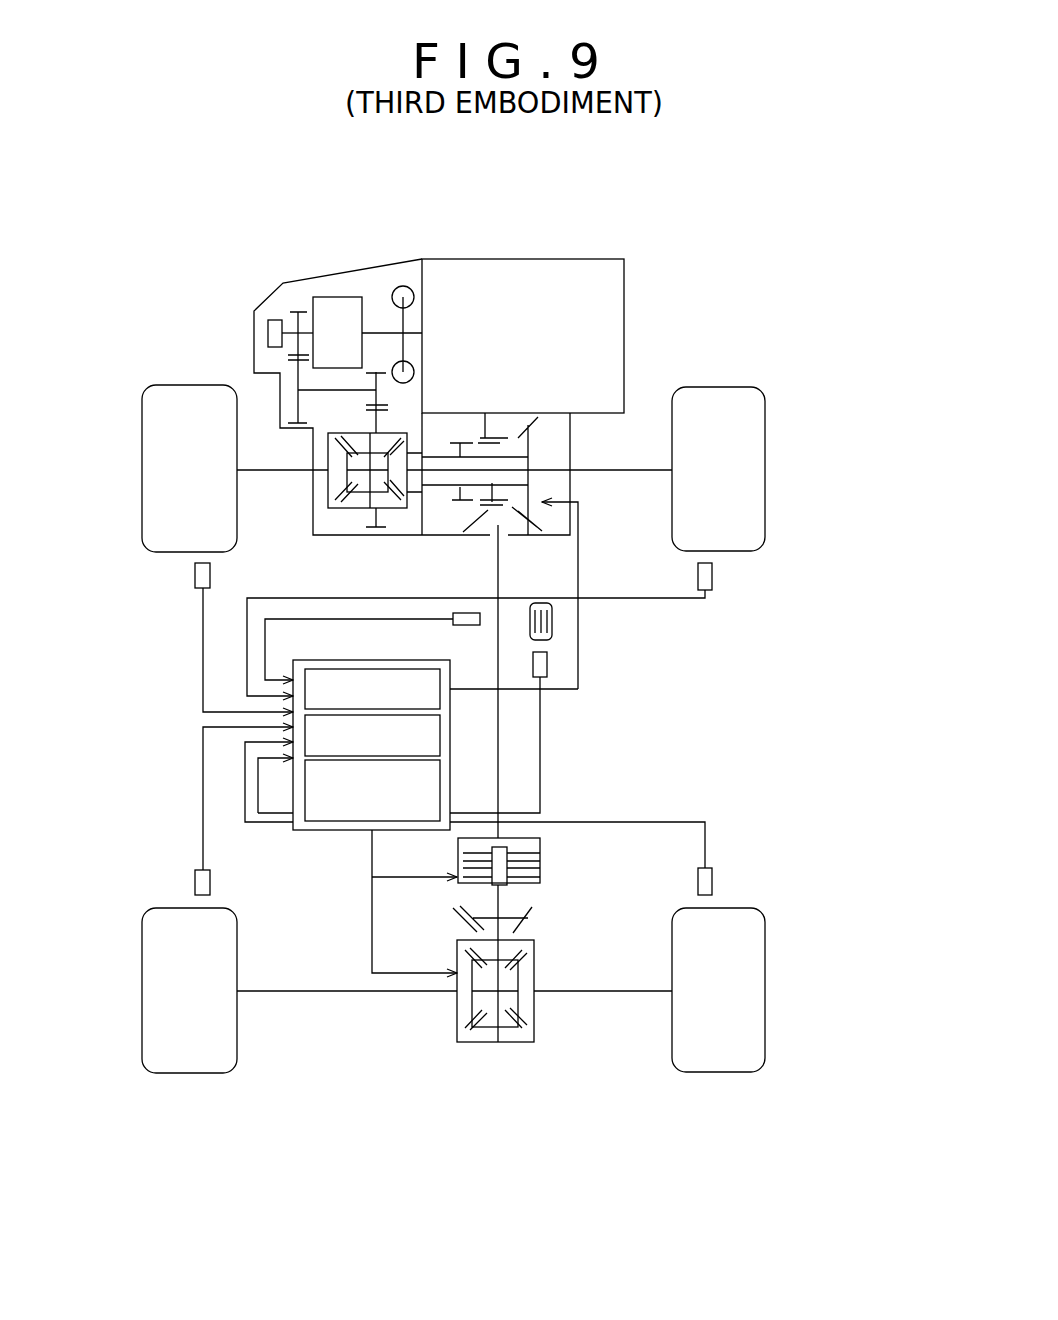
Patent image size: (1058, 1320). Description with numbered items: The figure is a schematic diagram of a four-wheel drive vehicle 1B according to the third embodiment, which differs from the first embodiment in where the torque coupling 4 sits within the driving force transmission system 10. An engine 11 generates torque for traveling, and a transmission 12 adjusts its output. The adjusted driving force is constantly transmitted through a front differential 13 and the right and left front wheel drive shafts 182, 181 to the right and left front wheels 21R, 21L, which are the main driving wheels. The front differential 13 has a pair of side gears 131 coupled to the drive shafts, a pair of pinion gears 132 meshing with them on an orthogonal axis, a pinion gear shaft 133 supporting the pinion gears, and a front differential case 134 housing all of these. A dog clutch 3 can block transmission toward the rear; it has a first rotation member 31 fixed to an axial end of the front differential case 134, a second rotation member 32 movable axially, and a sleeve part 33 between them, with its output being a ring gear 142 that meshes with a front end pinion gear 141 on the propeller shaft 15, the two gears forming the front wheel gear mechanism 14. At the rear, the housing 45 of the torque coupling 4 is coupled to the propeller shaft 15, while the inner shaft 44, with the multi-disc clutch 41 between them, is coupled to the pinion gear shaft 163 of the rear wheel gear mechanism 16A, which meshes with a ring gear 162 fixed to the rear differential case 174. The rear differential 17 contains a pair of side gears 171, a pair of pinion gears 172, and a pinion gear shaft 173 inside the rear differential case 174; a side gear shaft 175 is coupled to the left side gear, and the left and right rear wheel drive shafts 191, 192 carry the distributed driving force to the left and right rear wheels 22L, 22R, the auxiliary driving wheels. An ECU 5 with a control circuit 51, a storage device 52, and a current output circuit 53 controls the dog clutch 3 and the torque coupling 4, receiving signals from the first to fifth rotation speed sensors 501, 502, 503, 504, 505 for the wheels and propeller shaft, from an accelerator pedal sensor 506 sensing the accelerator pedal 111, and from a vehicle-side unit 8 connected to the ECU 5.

The four-wheel drive vehicle 1B is at (682, 212).
The driving force transmission system 10 is at (557, 861).
The engine 11 is at (483, 258).
The transmission 12 is at (308, 293).
The front differential 13 is at (337, 517).
The side gears 131 is at (350, 466).
The pinion gears 132 is at (365, 460).
The pinion gear shaft 133 is at (340, 474).
The front differential case 134 is at (343, 446).
The dog clutch 3 is at (617, 412).
The first rotation member 31 is at (465, 448).
The second rotation member 32 is at (487, 437).
The sleeve 33 is at (492, 485).
The front wheel gear mechanism 14 is at (629, 549).
The front end pinion gear 141 is at (525, 530).
The ring gear 142 is at (530, 437).
The propeller shaft 15 is at (502, 790).
The rear wheel gear mechanism 16A is at (656, 856).
The ring gear 162 is at (473, 918).
The pinion gear shaft 163 is at (532, 917).
The torque coupling 4 is at (505, 868).
The multi-disc clutch 41 is at (537, 875).
The inner shaft 44 is at (483, 878).
The housing 45 is at (458, 850).
The rear differential 17 is at (624, 1019).
The side gears 171 is at (517, 973).
The pinion gears 172 is at (500, 962).
The pinion gear shaft 173 is at (495, 990).
The rear differential case 174 is at (522, 1041).
The side gear shaft 175 is at (457, 992).
The left front wheel drive shaft 181 is at (303, 470).
The right front wheel drive shaft 182 is at (598, 470).
The left rear wheel drive shaft 191 is at (328, 993).
The right rear wheel drive shaft 192 is at (583, 997).
The left front wheel 21L is at (142, 465).
The right front wheel 21R is at (765, 458).
The left rear wheel 22L is at (142, 997).
The right rear wheel 22R is at (767, 997).
The electric control unit (ECU) 5 is at (394, 800).
The control circuit 51 is at (452, 683).
The storage device 52 is at (440, 747).
The current output circuit 53 is at (440, 778).
The ESC (electronic stability control device) 8 is at (542, 738).
The accelerator pedal 111 is at (540, 602).
The first rotation speed sensor 501 is at (193, 585).
The second rotation speed sensor 502 is at (713, 578).
The third rotation speed sensor 503 is at (193, 883).
The fourth rotation speed sensor 504 is at (713, 878).
The fifth rotation speed sensor 505 is at (465, 627).
The accelerator pedal sensor 506 is at (548, 670).